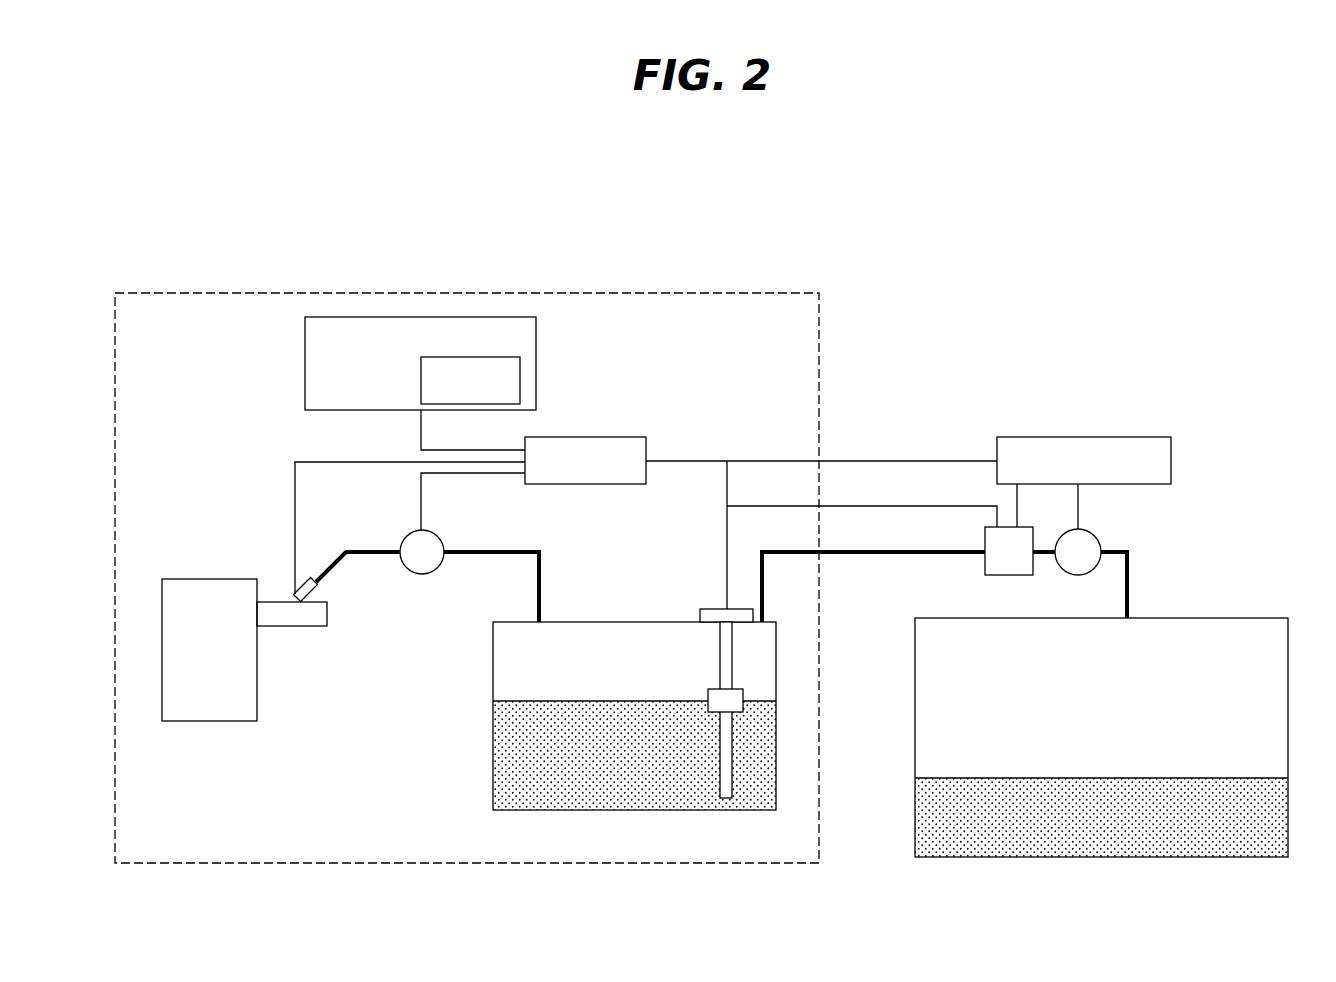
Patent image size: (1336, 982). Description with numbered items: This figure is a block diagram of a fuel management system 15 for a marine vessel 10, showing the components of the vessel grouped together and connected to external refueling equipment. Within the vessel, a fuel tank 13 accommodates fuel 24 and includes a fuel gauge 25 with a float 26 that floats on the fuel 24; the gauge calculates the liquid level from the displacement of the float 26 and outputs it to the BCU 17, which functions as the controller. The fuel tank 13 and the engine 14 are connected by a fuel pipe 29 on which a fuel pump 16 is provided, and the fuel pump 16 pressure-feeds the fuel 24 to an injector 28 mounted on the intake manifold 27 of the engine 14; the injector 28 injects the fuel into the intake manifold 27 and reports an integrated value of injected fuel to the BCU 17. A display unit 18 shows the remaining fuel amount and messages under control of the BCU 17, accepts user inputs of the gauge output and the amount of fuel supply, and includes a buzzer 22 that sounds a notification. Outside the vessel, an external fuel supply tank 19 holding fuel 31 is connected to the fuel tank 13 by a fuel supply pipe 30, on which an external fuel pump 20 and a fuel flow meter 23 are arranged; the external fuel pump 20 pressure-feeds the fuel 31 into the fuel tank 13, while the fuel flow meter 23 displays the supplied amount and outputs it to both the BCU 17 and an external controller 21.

The marine vessel 10 is at (644, 293).
The fuel tank 13 is at (493, 760).
The engine 14 is at (200, 579).
The fuel management system 15 is at (791, 197).
The fuel pump 16 is at (436, 532).
The BCU 17 is at (607, 437).
The display unit 18 is at (305, 332).
The external fuel supply tank 19 is at (1216, 618).
The external fuel pump 20 is at (1094, 535).
The external controller 21 is at (1090, 437).
The buzzer 22 is at (481, 357).
The fuel flow meter 23 is at (985, 565).
The fuel 24 is at (621, 766).
The fuel gauge 25 is at (716, 609).
The float 26 is at (708, 694).
The intake manifold 27 is at (305, 626).
The injector 28 is at (294, 595).
The fuel pipe 29 is at (537, 552).
The fuel supply pipe 30 is at (866, 555).
The fuel 31 is at (1088, 827).